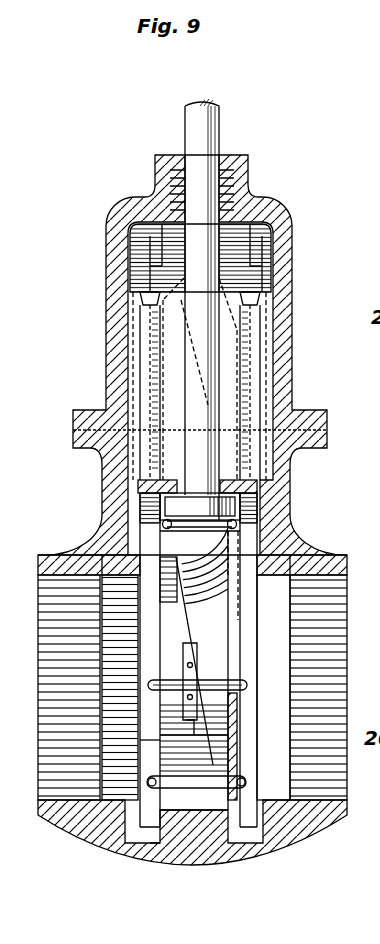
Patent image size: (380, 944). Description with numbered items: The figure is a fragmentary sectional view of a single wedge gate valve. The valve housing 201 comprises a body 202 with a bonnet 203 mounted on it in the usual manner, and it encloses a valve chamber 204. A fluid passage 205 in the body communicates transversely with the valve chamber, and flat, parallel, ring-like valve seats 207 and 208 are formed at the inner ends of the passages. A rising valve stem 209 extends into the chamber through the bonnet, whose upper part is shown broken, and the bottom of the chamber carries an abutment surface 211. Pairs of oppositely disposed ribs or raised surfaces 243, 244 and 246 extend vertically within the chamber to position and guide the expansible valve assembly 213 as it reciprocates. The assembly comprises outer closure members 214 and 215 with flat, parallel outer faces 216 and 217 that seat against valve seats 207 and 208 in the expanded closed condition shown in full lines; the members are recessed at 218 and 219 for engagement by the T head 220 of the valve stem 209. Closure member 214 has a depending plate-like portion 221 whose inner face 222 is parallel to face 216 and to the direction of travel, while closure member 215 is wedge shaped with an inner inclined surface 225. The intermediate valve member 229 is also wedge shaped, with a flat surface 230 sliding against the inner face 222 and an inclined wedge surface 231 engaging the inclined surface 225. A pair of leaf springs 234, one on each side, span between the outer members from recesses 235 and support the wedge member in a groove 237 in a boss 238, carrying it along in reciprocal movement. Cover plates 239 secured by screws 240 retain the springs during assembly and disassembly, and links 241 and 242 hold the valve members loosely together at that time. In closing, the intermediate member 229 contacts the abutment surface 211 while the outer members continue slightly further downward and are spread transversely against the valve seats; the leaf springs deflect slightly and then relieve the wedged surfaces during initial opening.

The valve housing 201 is at (283, 372).
The body 202 is at (258, 513).
The bonnet 203 is at (262, 198).
The valve chamber 204 is at (272, 268).
The fluid passage 205 is at (57, 795).
The valve seat 207 is at (138, 575).
The valve seat 208 is at (258, 560).
The valve stem 209 is at (223, 132).
The abutment surface 211 is at (193, 824).
The expansible valve assembly 213 is at (238, 623).
The outer valve disc or closure member 214 is at (150, 522).
The outer valve disc or closure member 215 is at (260, 510).
The outer surface or face 216 is at (140, 537).
The outer surface or face 217 is at (260, 533).
The recess 218 is at (153, 497).
The recess 219 is at (258, 493).
The T head 220 is at (200, 506).
The plate-like portion 221 is at (140, 615).
The inner face or surface 222 is at (142, 637).
The inner inclined or tapered flat surface 225 is at (290, 592).
The intermediate valve member 229 is at (203, 745).
The flat surface 230 is at (153, 747).
The inclined wedge surface 231 is at (210, 720).
The leaf spring 234 is at (245, 681).
The recess 235 is at (152, 687).
The groove 237 is at (202, 654).
The boss or projection 238 is at (167, 623).
The cover plate 239 is at (187, 699).
The screw 240 is at (187, 667).
The link 241 is at (160, 528).
The link 242 is at (243, 780).
The rib or raised surface 243 is at (148, 318).
The rib or raised surface 244 is at (250, 316).
The rib or raised surface 246 is at (130, 342).